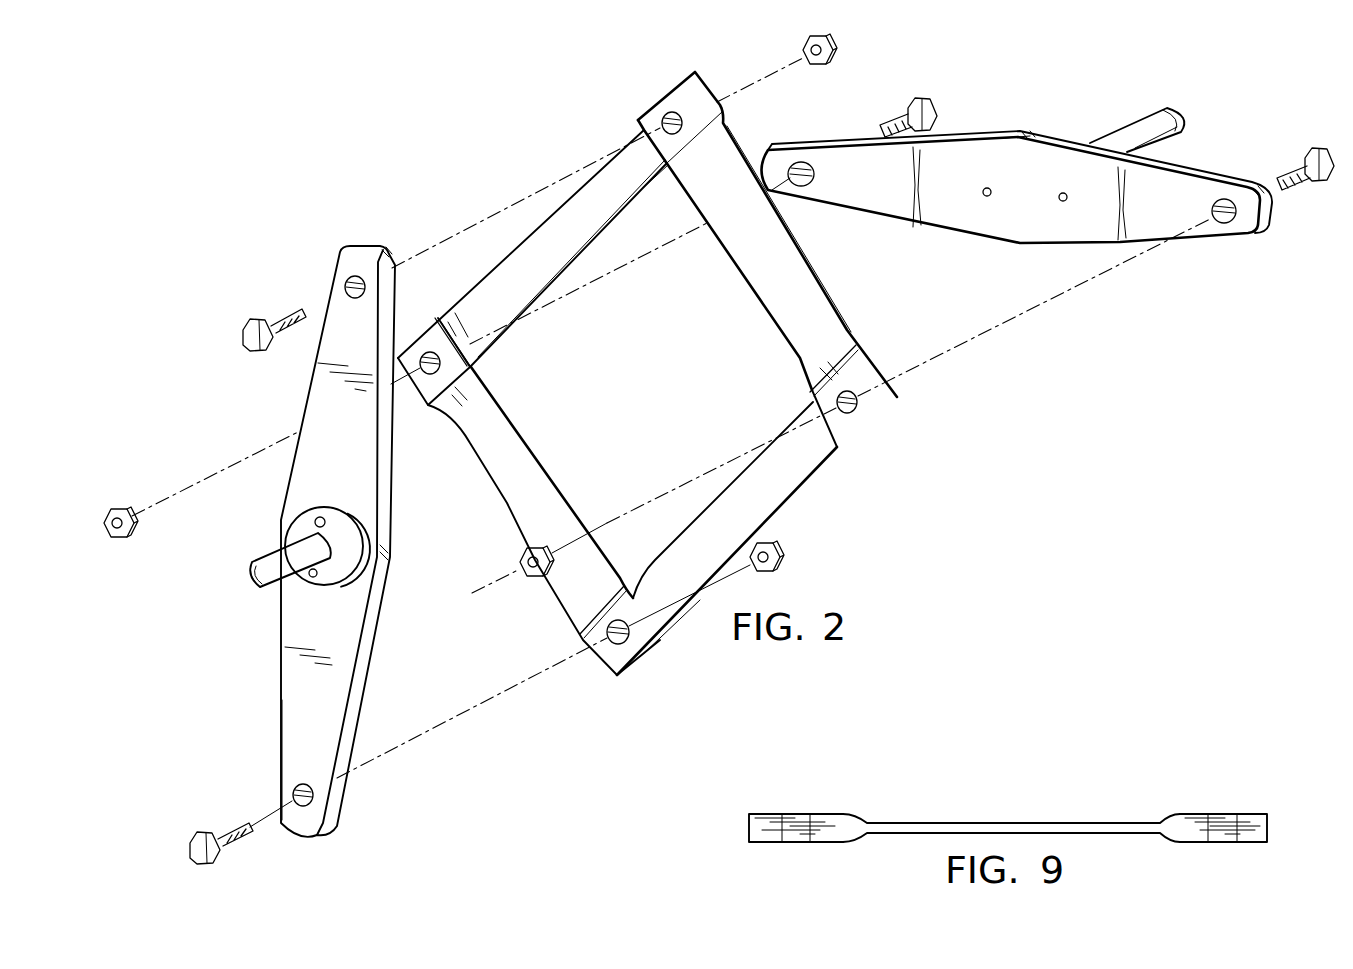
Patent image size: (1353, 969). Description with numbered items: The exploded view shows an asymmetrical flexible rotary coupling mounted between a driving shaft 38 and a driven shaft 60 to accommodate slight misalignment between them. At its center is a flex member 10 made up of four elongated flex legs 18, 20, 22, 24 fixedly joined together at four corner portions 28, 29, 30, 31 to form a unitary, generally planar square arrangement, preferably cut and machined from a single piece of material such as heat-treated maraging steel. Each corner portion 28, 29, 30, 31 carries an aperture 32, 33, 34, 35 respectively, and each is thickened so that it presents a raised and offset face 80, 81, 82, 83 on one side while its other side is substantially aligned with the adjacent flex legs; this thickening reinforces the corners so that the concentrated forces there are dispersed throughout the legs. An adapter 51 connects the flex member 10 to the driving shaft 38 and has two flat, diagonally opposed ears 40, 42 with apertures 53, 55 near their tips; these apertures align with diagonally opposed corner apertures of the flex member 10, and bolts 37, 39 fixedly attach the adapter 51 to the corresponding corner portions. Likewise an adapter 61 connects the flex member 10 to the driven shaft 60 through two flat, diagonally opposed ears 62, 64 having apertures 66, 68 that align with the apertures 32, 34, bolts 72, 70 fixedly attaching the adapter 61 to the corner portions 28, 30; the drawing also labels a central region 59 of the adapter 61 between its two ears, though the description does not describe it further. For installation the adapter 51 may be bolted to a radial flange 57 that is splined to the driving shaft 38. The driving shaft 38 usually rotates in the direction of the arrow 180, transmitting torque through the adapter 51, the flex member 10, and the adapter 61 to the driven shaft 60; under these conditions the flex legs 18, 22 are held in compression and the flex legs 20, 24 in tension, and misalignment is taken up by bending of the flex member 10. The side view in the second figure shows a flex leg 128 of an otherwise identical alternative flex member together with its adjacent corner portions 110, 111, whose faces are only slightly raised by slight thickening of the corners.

In FIG. 2, the flex member 10 is at (797, 532).
In FIG. 2, the flex leg 18 is at (536, 471).
In FIG. 2, the flex leg 20 is at (523, 266).
In FIG. 2, the flex leg 22 is at (743, 251).
In FIG. 2, the flex leg 24 is at (778, 487).
In FIG. 2, the corner portion 28 is at (430, 340).
In FIG. 2, the corner portion 29 is at (663, 103).
In FIG. 2, the corner portion 30 is at (868, 408).
In FIG. 2, the corner portion 31 is at (613, 654).
In FIG. 2, the aperture 32 is at (424, 374).
In FIG. 2, the aperture 33 is at (662, 122).
In FIG. 2, the aperture 34 is at (838, 402).
In FIG. 2, the aperture 35 is at (640, 650).
In FIG. 2, the bolt 37 is at (258, 330).
In FIG. 2, the driving shaft 38 is at (290, 583).
In FIG. 2, the bolt 39 is at (205, 845).
In FIG. 2, the ear 40 is at (387, 470).
In FIG. 2, the ear 42 is at (343, 680).
In FIG. 2, the adapter 51 is at (410, 512).
In FIG. 2, the aperture 53 is at (345, 281).
In FIG. 2, the aperture 55 is at (337, 820).
In FIG. 2, the radial flange 57 is at (300, 530).
In FIG. 2, the arm apex 59 is at (1023, 137).
In FIG. 2, the driven shaft 60 is at (1130, 120).
In FIG. 2, the adapter 61 is at (1228, 160).
In FIG. 2, the ear 62 is at (875, 195).
In FIG. 2, the ear 64 is at (1077, 232).
In FIG. 2, the aperture 66 is at (790, 173).
In FIG. 2, the aperture 68 is at (1226, 226).
In FIG. 2, the bolt 70 is at (927, 103).
In FIG. 2, the bolt 72 is at (1310, 152).
In FIG. 2, the raised and offset face 80 is at (400, 358).
In FIG. 2, the raised and offset face 81 is at (713, 97).
In FIG. 2, the raised and offset face 82 is at (856, 420).
In FIG. 2, the raised and offset face 83 is at (632, 668).
In FIG. 2, the arrow 180 is at (280, 556).
In FIG. 9, the corner portion 110 is at (1248, 805).
In FIG. 9, the corner portion 111 is at (784, 804).
In FIG. 9, the flex leg 128 is at (977, 820).